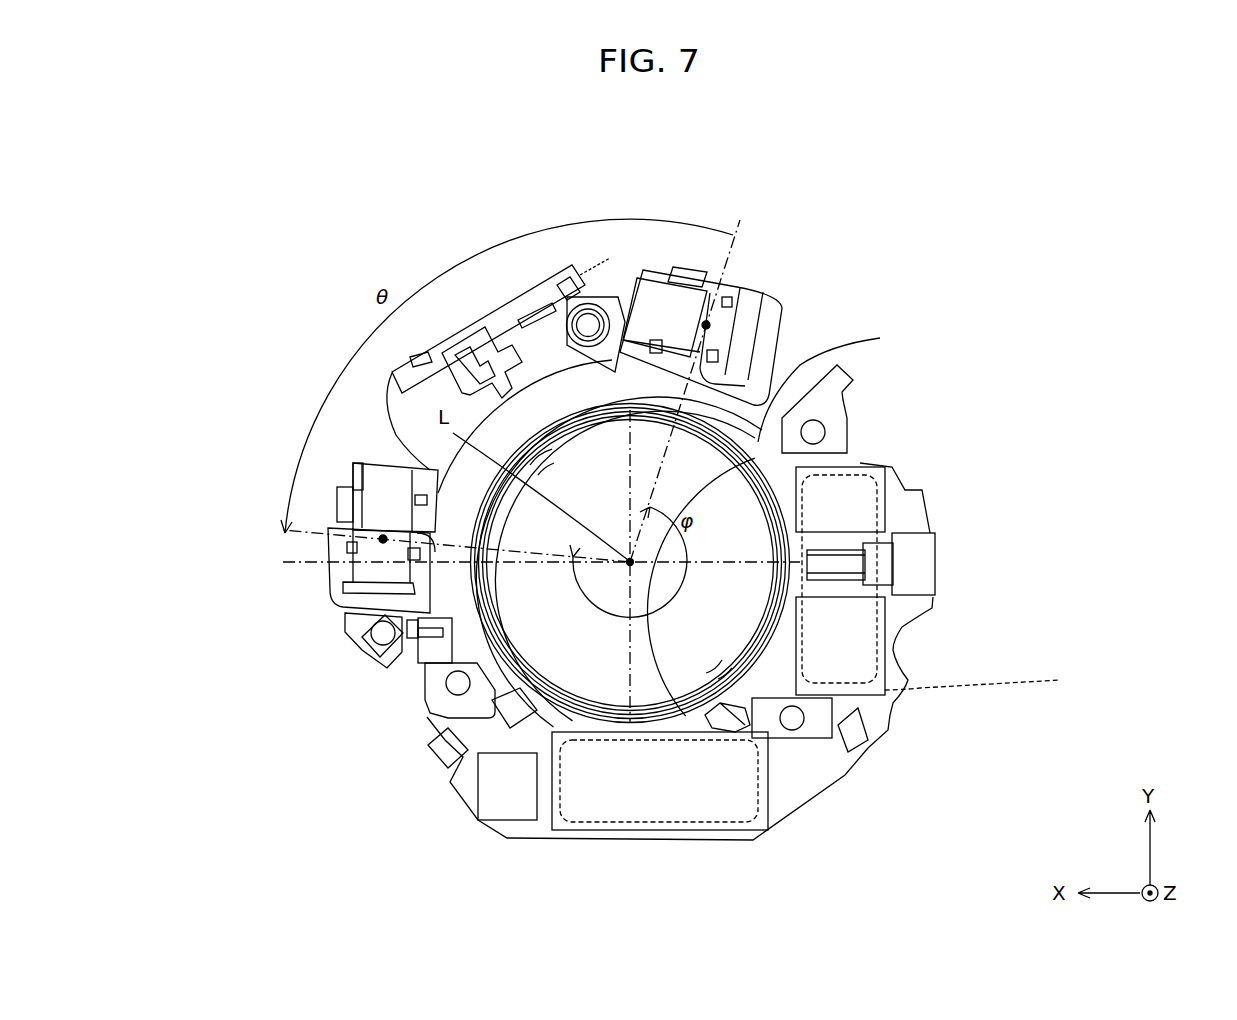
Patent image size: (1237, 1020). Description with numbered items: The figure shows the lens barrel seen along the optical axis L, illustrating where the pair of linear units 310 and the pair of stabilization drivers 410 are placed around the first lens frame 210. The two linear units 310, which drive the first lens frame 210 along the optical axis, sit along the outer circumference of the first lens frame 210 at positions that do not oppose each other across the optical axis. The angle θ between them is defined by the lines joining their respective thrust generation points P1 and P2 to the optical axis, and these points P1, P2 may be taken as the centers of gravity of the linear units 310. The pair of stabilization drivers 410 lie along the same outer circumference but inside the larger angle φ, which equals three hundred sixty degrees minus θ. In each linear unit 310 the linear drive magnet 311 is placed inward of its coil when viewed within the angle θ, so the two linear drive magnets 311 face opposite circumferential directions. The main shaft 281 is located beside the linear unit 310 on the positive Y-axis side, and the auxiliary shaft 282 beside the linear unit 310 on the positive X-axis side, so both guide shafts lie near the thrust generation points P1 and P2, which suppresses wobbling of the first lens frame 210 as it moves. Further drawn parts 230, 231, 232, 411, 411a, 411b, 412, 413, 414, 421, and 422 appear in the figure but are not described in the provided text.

The first lens frame 210 is at (766, 396).
The holder bracket 230 is at (845, 380).
The housing base 231 is at (525, 630).
The connector terminal 232 is at (830, 565).
The main shaft 281 is at (590, 323).
The auxiliary shaft 282 is at (370, 645).
The linear unit 310 is at (791, 276).
The linear drive magnet 311 is at (690, 268).
The stabilization driver 410 is at (1118, 530).
The circuit board 411 is at (1040, 453).
The upper board portion 411a is at (883, 480).
The lower board portion 411b is at (885, 640).
The bottom circuit board 412 is at (768, 792).
The board outline 413 is at (994, 685).
The board outline 414 is at (750, 830).
The connector 421 is at (935, 567).
The connector block 422 is at (478, 800).
The thrust generation point P1 is at (708, 326).
The thrust generation point P2 is at (383, 537).